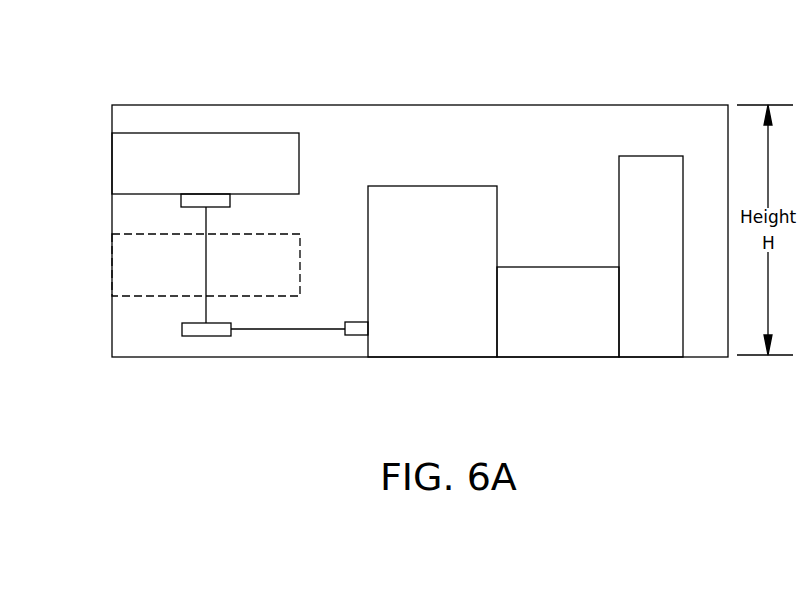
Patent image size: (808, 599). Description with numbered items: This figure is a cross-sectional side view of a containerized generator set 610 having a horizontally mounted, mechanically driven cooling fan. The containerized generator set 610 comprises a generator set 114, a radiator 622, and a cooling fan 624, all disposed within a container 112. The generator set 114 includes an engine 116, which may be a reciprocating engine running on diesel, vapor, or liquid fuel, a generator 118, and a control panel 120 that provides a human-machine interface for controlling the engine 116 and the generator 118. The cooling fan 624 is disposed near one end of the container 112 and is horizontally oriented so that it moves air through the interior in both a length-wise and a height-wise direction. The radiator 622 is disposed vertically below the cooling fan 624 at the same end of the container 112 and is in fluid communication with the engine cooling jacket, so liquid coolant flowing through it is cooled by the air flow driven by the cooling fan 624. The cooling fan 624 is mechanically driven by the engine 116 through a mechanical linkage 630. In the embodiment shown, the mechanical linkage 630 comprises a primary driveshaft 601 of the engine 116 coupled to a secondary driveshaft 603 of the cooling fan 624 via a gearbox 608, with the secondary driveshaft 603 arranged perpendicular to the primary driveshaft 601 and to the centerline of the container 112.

The containerized generator set 610 is at (673, 72).
The container 112 is at (707, 357).
The generator set 114 is at (555, 373).
The engine 116 is at (439, 260).
The generator 118 is at (572, 318).
The control panel 120 is at (665, 262).
The cooling fan 624 is at (112, 163).
The radiator 622 is at (128, 260).
The secondary driveshaft 603 is at (207, 265).
The gearbox 608 is at (206, 338).
The primary driveshaft 601 is at (322, 327).
The mechanical linkage 630 is at (282, 347).